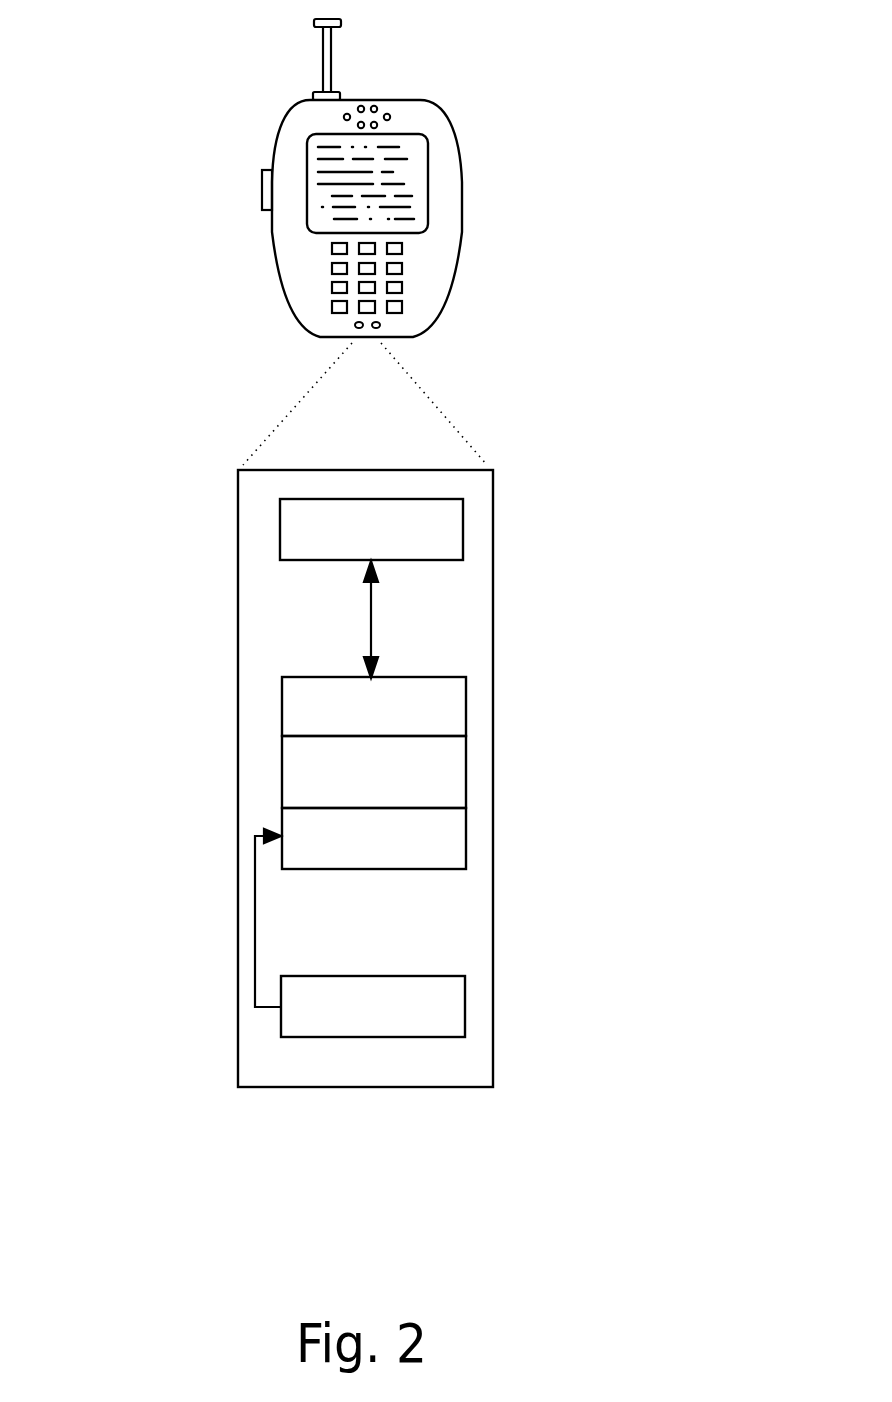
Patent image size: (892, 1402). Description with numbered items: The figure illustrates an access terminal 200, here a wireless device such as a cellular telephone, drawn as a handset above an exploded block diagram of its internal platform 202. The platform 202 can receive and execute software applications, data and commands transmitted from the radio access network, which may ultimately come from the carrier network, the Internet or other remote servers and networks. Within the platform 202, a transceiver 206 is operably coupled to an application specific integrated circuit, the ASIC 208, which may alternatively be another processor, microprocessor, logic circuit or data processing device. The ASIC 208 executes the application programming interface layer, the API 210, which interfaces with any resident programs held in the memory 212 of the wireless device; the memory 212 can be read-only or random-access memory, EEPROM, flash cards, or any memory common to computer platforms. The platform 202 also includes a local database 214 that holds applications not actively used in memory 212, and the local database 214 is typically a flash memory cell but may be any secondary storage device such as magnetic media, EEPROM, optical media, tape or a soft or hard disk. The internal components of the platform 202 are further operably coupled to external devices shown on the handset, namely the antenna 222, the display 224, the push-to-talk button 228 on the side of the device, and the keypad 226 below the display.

The access terminal 200 is at (437, 313).
The platform 202 is at (238, 683).
The transceiver 206 is at (463, 529).
The application specific integrated circuit 208 is at (466, 716).
The application programming interface 210 is at (466, 767).
The memory 212 is at (466, 838).
The local database 214 is at (465, 987).
The antenna 222 is at (331, 35).
The display 224 is at (428, 170).
The keypad 226 is at (402, 268).
The push-to-talk button 228 is at (262, 182).